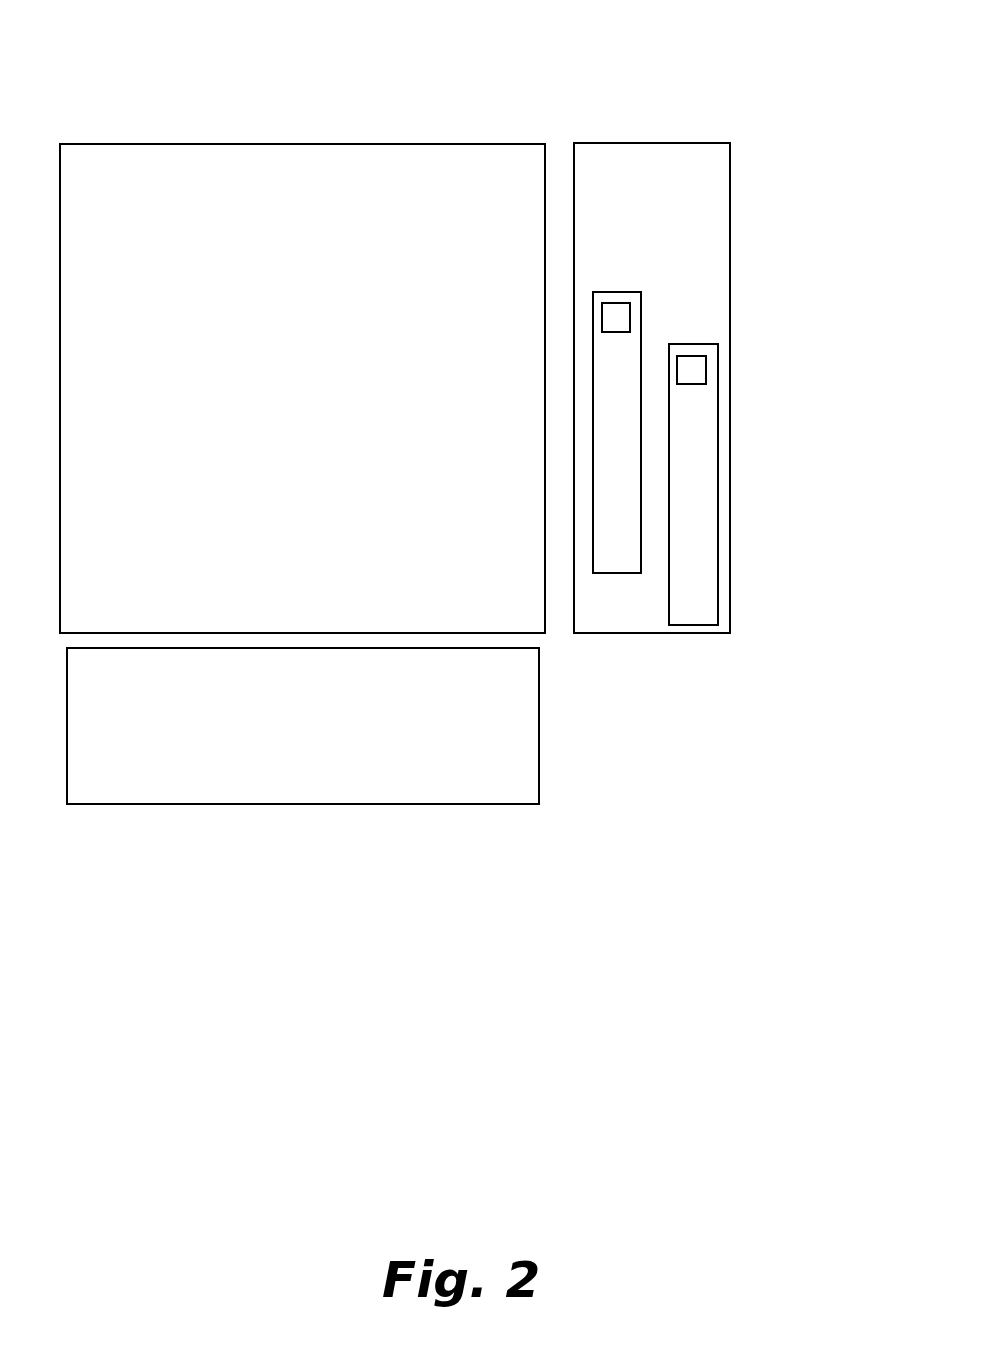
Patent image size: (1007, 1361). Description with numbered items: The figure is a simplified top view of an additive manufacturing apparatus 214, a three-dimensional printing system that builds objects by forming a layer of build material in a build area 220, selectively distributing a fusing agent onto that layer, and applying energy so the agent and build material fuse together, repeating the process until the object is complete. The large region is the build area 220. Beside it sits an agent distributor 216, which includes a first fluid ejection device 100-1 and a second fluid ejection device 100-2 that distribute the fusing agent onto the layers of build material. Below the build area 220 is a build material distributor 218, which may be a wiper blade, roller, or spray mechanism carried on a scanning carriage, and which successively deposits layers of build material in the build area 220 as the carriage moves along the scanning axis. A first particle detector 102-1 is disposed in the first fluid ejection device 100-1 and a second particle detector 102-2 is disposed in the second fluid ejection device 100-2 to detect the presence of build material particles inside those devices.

The additive manufacturing apparatus 214 is at (278, 86).
The build area 220 is at (485, 170).
The agent distributor 216 is at (680, 180).
The build material distributor 218 is at (517, 702).
The first fluid ejection device 100-1 is at (629, 347).
The first particle detector 102-1 is at (621, 322).
The second fluid ejection device 100-2 is at (703, 402).
The second particle detector 102-2 is at (693, 378).